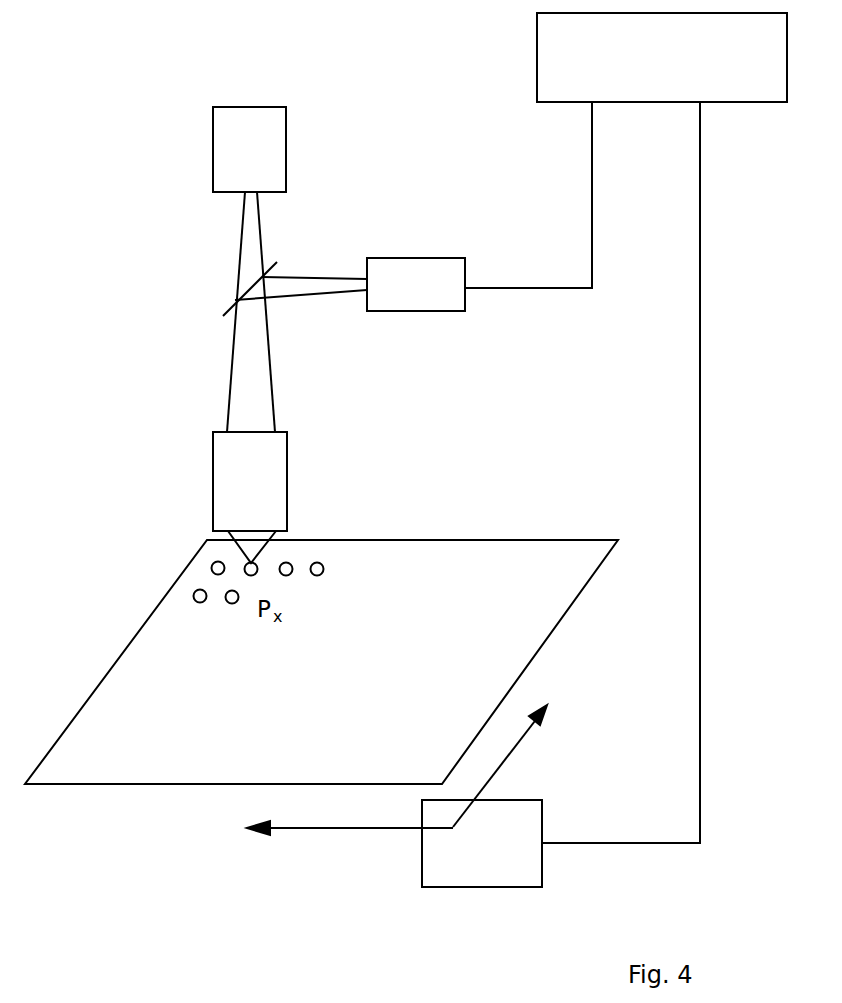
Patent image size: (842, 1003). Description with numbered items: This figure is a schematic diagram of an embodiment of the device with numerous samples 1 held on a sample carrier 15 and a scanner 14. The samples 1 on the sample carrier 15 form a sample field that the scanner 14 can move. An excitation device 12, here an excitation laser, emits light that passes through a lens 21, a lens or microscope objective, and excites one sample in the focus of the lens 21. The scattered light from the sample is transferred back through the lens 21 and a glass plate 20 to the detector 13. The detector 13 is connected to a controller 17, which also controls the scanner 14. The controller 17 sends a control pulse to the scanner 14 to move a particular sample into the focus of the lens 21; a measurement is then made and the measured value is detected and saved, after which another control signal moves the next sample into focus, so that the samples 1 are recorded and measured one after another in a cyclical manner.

The sample 1 is at (211, 566).
The excitation device 12 is at (249, 149).
The detector 13 is at (413, 206).
The scanner 14 is at (473, 494).
The sample carrier 15 is at (321, 662).
The controller 17 is at (662, 57).
The glass plate 20 is at (221, 303).
The lens 21 is at (250, 497).